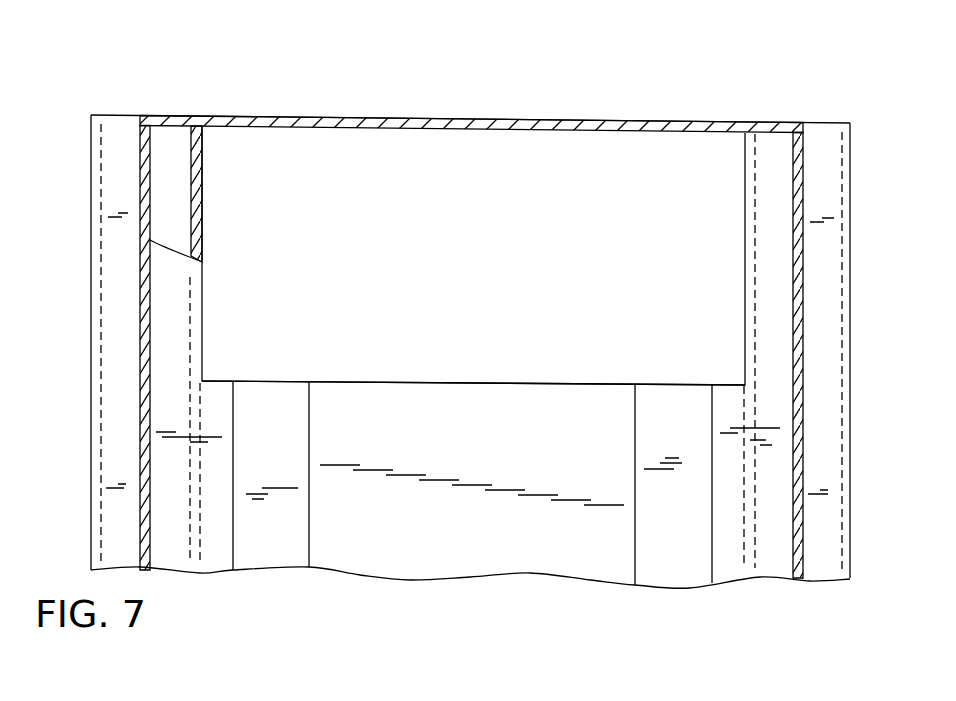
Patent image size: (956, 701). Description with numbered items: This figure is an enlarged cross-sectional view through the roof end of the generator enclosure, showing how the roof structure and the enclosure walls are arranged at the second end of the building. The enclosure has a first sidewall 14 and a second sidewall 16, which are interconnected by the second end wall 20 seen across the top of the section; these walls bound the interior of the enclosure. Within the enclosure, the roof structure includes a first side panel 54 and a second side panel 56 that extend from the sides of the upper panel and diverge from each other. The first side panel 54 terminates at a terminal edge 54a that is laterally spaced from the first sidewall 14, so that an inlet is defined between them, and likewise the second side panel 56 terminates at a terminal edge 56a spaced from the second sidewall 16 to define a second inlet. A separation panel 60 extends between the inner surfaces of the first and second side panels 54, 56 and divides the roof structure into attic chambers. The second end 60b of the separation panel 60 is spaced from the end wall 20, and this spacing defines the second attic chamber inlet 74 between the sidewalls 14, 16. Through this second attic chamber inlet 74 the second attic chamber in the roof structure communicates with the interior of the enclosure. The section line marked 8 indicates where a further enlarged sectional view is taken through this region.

The section line 8- 8 is at (171, 100).
The first sidewall 14 is at (805, 195).
The second sidewall 16 is at (191, 204).
The second end wall 20 is at (297, 116).
The first side panel 54 is at (815, 385).
The terminal edge 54a is at (858, 330).
The second side panel 56 is at (115, 417).
The terminal edge 56a is at (86, 360).
The separation panel 60 is at (443, 438).
The second end 60b is at (433, 376).
The second attic chamber inlet 74 is at (309, 240).